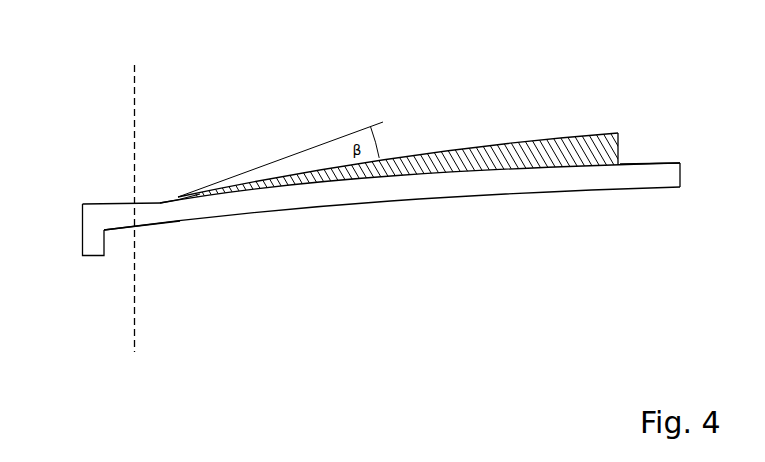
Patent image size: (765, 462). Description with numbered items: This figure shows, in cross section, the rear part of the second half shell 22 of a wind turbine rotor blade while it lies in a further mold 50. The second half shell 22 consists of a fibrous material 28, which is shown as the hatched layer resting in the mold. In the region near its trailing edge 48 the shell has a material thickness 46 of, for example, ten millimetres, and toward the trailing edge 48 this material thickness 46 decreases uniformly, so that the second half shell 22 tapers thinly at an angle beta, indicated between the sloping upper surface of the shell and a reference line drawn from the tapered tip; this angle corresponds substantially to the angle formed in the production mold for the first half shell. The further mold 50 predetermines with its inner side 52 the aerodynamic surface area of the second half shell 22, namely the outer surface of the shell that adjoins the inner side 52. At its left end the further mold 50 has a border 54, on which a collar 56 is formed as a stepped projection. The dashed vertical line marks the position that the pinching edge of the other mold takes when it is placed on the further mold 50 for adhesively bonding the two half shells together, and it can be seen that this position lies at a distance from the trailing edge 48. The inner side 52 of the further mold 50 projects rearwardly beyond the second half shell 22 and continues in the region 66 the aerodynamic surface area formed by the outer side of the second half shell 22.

The second half shell 22 is at (440, 137).
The fibrous material 28 is at (483, 150).
The material thickness 46 is at (267, 172).
The trailing edge 48 is at (178, 196).
The further mold 50 is at (313, 210).
The inner side 52 is at (633, 162).
The border 54 is at (112, 215).
The collar 56 is at (97, 247).
The region 66 is at (157, 202).